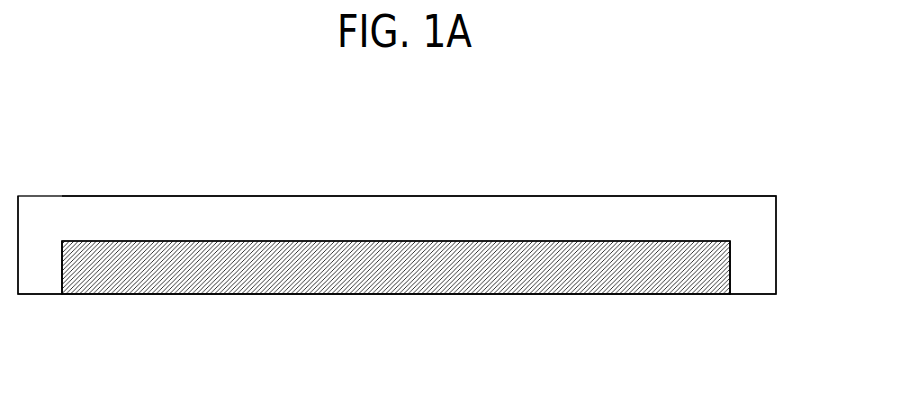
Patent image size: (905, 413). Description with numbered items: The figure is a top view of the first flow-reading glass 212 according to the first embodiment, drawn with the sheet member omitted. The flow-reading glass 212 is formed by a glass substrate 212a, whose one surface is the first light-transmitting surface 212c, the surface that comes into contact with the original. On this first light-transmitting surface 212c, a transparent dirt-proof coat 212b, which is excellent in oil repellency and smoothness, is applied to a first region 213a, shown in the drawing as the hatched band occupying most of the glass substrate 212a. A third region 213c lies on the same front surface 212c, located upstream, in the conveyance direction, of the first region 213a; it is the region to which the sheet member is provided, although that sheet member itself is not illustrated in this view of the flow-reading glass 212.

The first flow-reading glass 212 is at (623, 162).
The glass substrate 212a is at (758, 196).
The transparent dirt-proof coat 212b is at (155, 277).
The first light-transmitting surface 212c is at (35, 262).
The first region 213a is at (675, 277).
The third region 213c is at (675, 208).